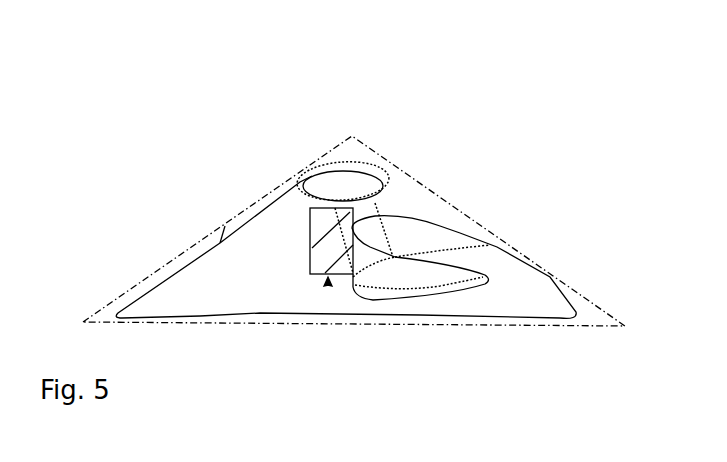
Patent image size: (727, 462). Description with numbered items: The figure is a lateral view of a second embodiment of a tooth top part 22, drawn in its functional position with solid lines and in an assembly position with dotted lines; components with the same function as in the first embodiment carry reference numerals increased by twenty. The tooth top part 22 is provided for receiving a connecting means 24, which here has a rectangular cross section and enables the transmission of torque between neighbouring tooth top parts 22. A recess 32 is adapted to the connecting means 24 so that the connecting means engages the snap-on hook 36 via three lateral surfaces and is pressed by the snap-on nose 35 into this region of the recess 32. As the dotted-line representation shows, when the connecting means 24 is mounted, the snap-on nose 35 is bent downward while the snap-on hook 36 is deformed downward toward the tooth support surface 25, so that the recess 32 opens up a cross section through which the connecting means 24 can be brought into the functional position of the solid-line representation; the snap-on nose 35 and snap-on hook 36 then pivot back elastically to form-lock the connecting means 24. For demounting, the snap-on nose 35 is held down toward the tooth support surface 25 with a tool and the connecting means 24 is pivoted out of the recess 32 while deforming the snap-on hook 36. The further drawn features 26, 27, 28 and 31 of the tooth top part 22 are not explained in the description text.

The tooth top part 22 is at (387, 125).
The connecting means 24 is at (327, 232).
The tooth support surface 25 is at (427, 328).
The housing wall 26 is at (220, 243).
The reflector body 27 is at (460, 234).
The housing end portion 28 is at (538, 300).
The envelope contour 31 is at (260, 200).
The recess 32 is at (328, 285).
The snap-on nose 35 is at (348, 182).
The snap-on hook 36 is at (405, 230).